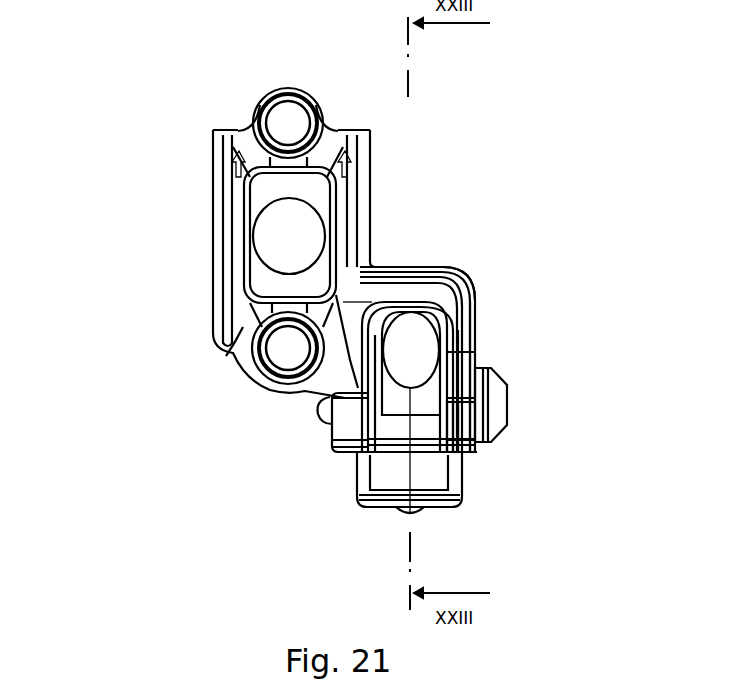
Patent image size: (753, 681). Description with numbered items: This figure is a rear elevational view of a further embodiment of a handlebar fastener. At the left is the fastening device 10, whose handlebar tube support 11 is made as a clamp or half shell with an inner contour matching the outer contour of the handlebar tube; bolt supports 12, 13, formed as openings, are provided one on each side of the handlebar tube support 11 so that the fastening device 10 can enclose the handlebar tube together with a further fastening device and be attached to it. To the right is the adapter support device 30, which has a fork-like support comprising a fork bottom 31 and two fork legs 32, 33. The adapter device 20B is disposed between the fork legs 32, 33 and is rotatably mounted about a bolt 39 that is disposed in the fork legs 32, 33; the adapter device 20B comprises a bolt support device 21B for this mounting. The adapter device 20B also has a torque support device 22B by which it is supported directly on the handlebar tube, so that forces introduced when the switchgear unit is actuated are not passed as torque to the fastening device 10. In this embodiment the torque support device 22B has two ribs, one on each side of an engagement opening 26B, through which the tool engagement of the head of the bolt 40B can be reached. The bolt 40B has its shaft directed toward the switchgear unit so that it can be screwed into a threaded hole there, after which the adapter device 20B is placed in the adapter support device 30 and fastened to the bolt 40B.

The fastening device 10 is at (348, 130).
The handlebar tube support 11 is at (230, 224).
The bolt support 12 is at (288, 123).
The bolt support 13 is at (290, 340).
The adapter support device 30 is at (374, 292).
The fork bottom 31 is at (455, 285).
The fork leg 32 is at (330, 400).
The fork leg 33 is at (465, 346).
The bolt 39 is at (503, 402).
The adapter device 20B is at (383, 428).
The bolt support device 21B is at (437, 430).
The torque support device 22B is at (403, 335).
The engagement opening 26B is at (425, 292).
The bolt 40B is at (424, 514).